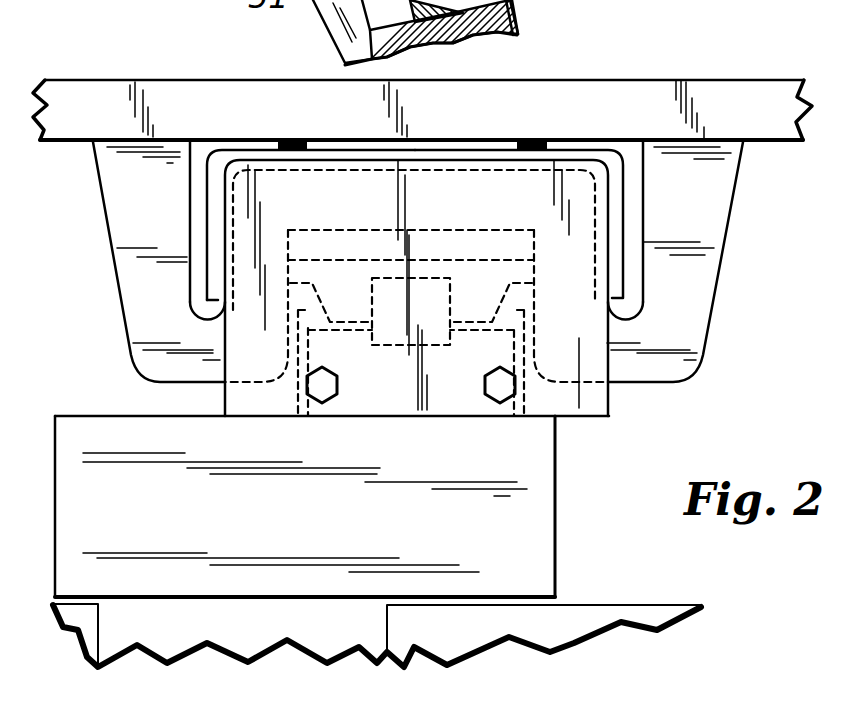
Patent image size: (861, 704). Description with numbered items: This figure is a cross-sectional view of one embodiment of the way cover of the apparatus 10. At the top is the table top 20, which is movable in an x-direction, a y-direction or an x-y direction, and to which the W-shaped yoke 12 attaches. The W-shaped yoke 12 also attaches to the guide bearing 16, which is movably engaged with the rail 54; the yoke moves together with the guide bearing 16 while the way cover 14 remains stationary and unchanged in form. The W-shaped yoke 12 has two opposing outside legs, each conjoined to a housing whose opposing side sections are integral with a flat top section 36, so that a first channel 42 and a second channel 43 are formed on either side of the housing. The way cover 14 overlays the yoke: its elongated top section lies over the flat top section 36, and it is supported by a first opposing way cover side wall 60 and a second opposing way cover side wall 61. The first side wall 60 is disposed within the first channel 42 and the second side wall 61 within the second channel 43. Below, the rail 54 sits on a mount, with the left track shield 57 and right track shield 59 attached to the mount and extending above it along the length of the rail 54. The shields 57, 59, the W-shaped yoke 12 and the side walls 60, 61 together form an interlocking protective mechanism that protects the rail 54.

The apparatus 10 is at (748, 78).
The W-shaped yoke 12 is at (700, 331).
The way cover 14 is at (200, 245).
The guide bearing 16 is at (352, 294).
The table top 20 is at (95, 86).
The flat top section 36 is at (372, 217).
The first channel 42 is at (195, 183).
The second channel 43 is at (632, 195).
The rail 54 is at (428, 300).
The left track shield 57 is at (308, 343).
The right track shield 59 is at (517, 338).
The first opposing way cover side wall 60 is at (213, 280).
The second opposing way cover side wall 61 is at (617, 290).